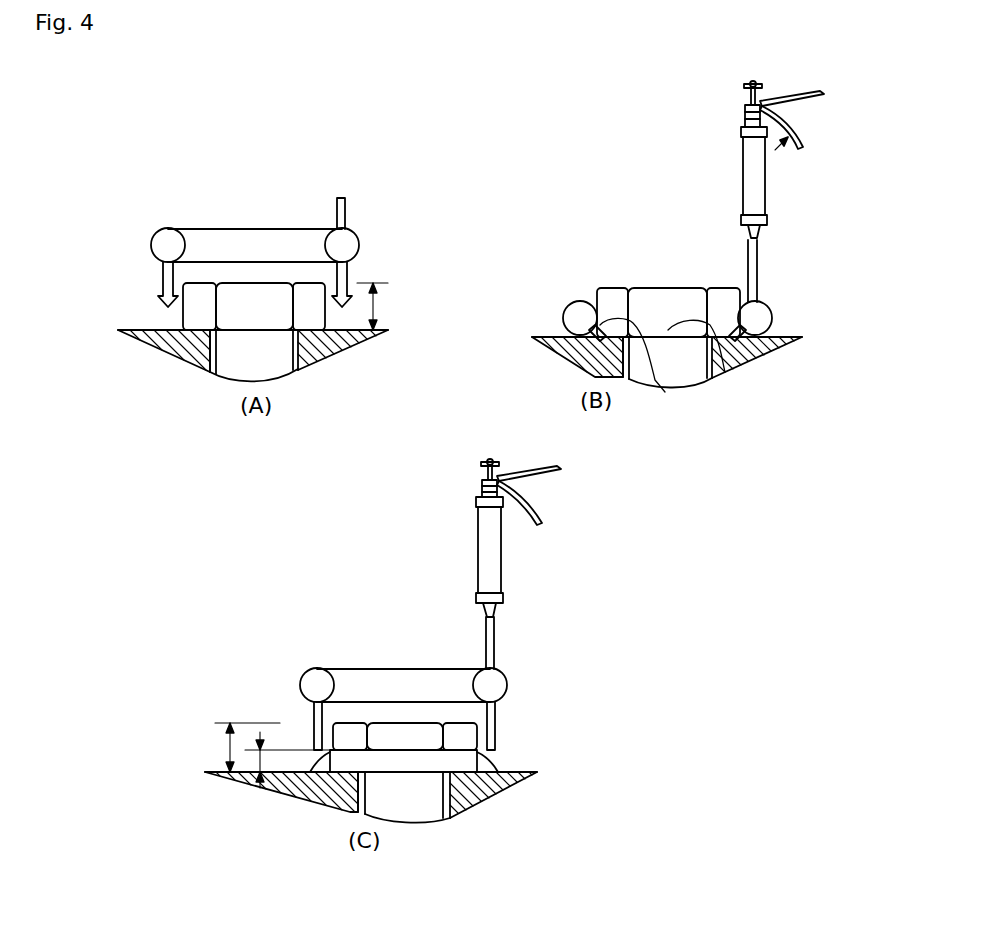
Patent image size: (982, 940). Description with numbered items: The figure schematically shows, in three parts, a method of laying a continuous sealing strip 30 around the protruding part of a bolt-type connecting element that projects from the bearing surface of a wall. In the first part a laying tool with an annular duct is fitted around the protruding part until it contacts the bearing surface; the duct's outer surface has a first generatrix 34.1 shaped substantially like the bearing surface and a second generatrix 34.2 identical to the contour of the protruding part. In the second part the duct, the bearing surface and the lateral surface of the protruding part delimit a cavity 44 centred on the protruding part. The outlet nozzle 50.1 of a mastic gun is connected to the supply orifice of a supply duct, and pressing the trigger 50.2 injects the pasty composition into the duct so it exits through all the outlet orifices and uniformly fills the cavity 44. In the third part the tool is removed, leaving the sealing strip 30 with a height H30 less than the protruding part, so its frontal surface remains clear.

The sealing strip 30 is at (510, 756).
The first generatrix 34.1 is at (592, 336).
The second generatrix 34.2 is at (600, 312).
The cavity 44 is at (666, 390).
The outlet nozzle 50.1 is at (744, 240).
The trigger 50.2 is at (798, 136).
The height of the sealing strip H30 is at (250, 770).